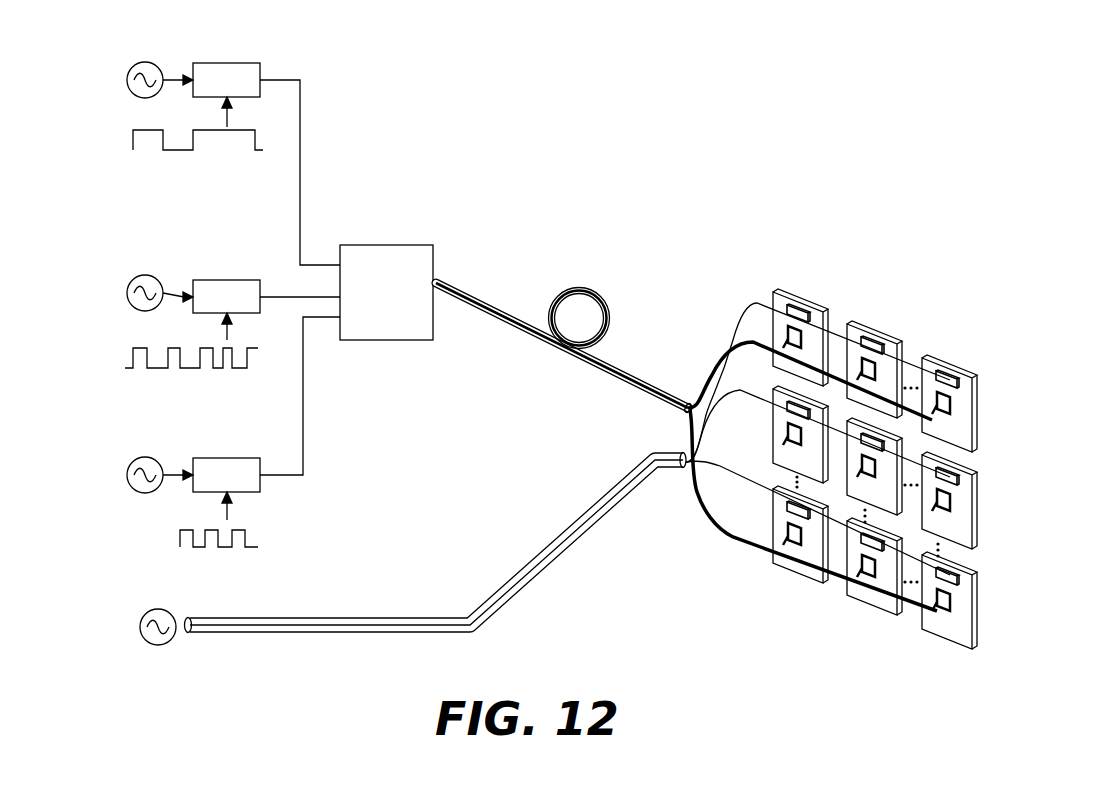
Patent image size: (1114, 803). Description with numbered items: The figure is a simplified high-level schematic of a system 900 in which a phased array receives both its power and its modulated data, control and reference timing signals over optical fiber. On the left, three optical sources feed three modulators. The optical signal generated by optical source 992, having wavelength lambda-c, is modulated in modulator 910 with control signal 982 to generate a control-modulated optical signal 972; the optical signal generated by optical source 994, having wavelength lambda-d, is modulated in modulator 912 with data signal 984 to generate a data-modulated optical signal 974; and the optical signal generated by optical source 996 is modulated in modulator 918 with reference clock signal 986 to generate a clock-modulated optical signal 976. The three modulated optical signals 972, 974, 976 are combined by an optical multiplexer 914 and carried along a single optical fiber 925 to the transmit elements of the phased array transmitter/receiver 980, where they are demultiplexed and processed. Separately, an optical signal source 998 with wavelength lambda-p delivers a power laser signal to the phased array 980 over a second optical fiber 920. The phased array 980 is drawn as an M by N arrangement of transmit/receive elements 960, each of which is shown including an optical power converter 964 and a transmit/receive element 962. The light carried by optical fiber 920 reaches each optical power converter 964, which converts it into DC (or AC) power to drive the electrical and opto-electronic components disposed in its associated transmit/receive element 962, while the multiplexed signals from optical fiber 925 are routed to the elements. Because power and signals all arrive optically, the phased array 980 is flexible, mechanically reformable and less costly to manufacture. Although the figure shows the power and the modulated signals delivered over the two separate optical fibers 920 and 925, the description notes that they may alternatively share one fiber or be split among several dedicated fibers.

The system 900 is at (665, 108).
The modulator 910 is at (213, 63).
The modulator 912 is at (223, 280).
The optical multiplexer 914 is at (397, 245).
The modulator 918 is at (228, 458).
The optical fiber 920 is at (495, 610).
The optical fiber 925 is at (617, 363).
The transmit/receive element 960 is at (913, 676).
The transmit/receive element 962 is at (803, 341).
The optical power converter 964 is at (1022, 463).
The control-modulated optical signal 972 is at (301, 127).
The data-modulated optical signal 974 is at (287, 296).
The clock-modulated optical signal 976 is at (304, 408).
The phased array transmitter/receiver 980 is at (888, 440).
The control signal 982 is at (226, 111).
The data signal 984 is at (226, 329).
The reference clock signal 986 is at (232, 519).
The optical source 992 is at (126, 80).
The optical source 994 is at (126, 294).
The optical source 996 is at (126, 476).
The optical signal source 998 is at (140, 628).